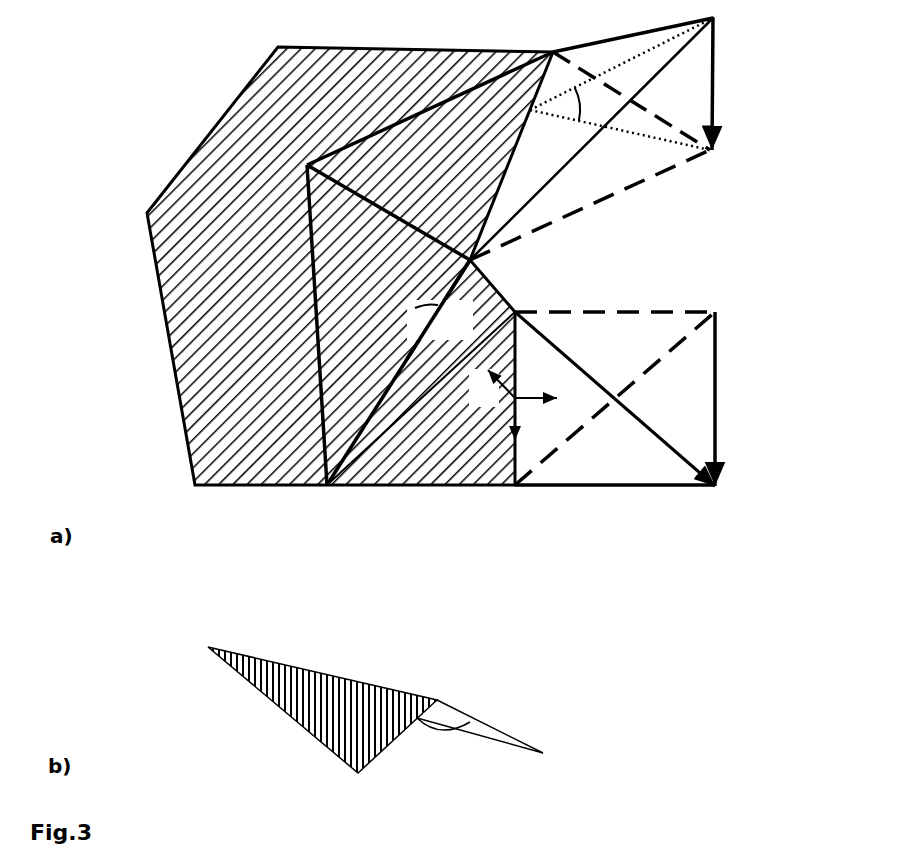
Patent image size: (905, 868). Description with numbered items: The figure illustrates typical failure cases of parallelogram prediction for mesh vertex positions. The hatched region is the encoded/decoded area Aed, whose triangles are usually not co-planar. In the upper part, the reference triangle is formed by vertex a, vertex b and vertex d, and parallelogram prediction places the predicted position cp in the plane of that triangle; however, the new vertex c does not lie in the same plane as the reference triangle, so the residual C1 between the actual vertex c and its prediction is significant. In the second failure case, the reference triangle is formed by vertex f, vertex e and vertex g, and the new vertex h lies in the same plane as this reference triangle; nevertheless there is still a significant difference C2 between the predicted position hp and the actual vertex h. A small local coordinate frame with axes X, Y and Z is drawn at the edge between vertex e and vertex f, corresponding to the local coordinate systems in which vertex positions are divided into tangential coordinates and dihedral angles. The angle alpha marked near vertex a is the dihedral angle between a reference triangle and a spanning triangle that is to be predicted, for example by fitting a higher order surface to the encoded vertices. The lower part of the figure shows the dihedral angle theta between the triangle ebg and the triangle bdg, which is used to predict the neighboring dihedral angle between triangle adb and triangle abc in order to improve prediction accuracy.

The encoded/decoded area Aed is at (212, 153).
The vertex a is at (629, 35).
The vertex b is at (576, 356).
The new vertex c is at (723, 18).
The predicted position c^p cp is at (607, 156).
The vertex d is at (422, 407).
The vertex e is at (533, 540).
The vertex f is at (615, 415).
The vertex g is at (344, 460).
The new vertex h is at (634, 482).
The predicted position h^p hp is at (632, 299).
The residual C1 is at (739, 84).
The difference C2 is at (744, 399).
The X axis X is at (527, 430).
The Y axis Y is at (545, 402).
The Z axis Z is at (492, 388).
The dihedral angle α alpha is at (621, 84).
The dihedral angle θ theta is at (440, 513).